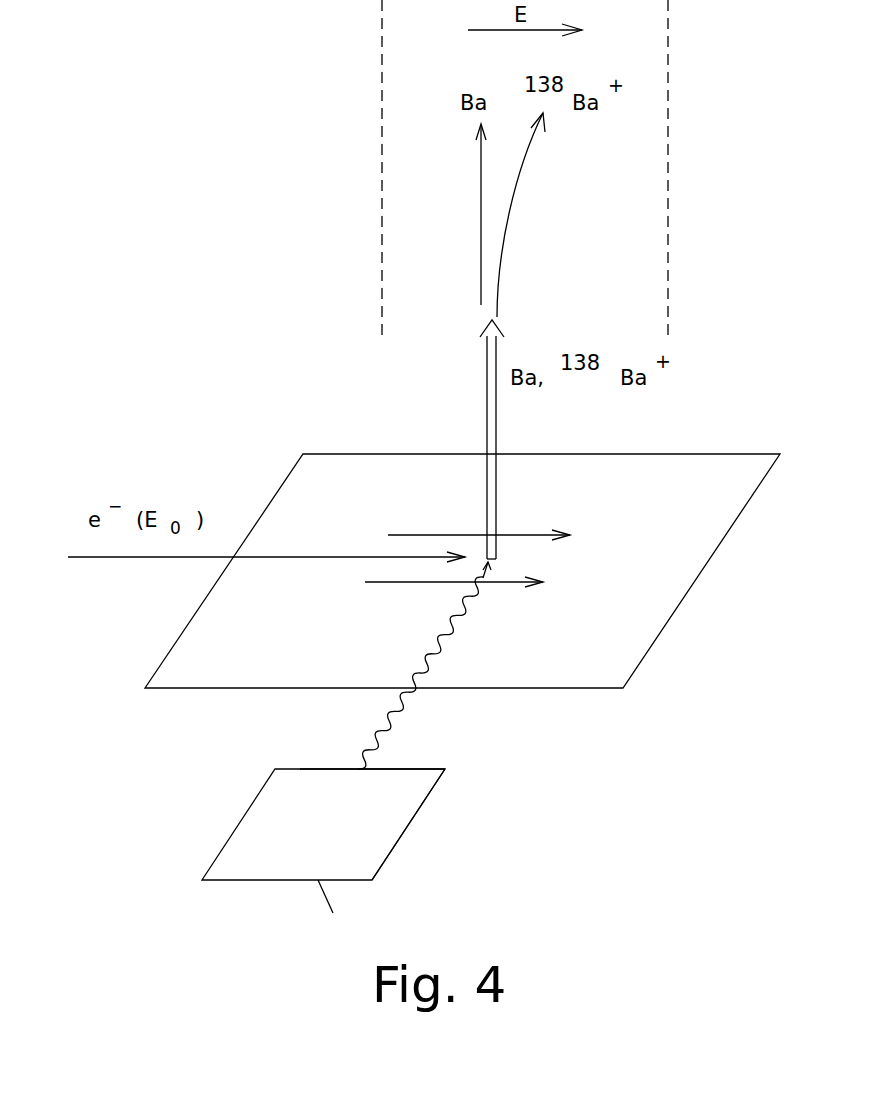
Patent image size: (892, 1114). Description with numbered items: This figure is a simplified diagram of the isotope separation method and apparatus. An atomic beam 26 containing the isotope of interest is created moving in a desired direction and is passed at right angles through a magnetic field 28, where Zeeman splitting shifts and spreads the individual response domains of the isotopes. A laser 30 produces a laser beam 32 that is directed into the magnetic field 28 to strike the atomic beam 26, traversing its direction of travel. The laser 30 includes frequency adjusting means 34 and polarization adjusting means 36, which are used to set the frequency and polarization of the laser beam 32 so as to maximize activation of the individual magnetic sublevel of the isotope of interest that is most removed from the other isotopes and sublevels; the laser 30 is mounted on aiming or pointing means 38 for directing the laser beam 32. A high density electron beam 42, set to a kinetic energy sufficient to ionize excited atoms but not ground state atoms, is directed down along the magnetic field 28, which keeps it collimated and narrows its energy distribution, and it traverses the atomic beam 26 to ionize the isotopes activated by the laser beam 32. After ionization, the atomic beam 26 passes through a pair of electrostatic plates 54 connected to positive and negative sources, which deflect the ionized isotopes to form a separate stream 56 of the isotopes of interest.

The atomic beam 26 is at (490, 433).
The magnetic field 28 is at (497, 587).
The laser 30 is at (253, 829).
The laser beam 32 is at (413, 695).
The frequency adjusting means 34 is at (377, 838).
The polarization adjusting means 36 is at (363, 772).
The aiming or pointing means 38 is at (333, 913).
The electron beam 42 is at (333, 558).
The electrostatic plates 54 is at (382, 127).
The separate stream 56 is at (512, 195).